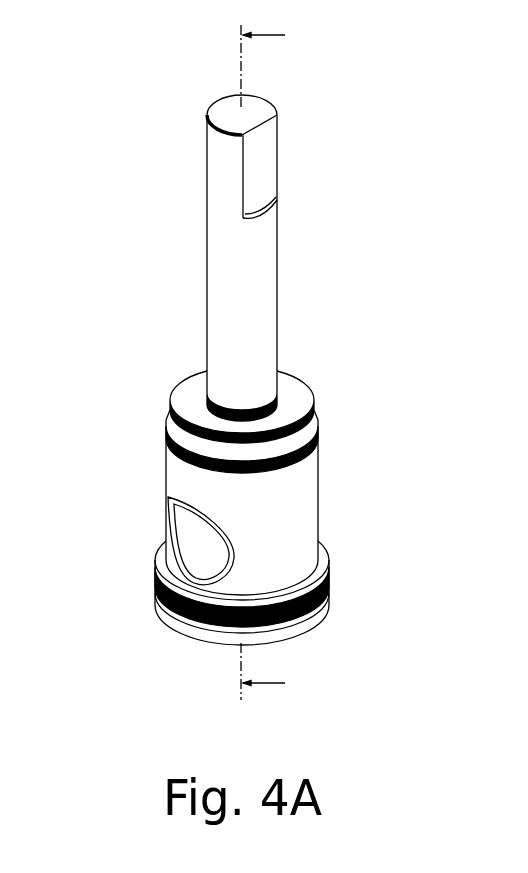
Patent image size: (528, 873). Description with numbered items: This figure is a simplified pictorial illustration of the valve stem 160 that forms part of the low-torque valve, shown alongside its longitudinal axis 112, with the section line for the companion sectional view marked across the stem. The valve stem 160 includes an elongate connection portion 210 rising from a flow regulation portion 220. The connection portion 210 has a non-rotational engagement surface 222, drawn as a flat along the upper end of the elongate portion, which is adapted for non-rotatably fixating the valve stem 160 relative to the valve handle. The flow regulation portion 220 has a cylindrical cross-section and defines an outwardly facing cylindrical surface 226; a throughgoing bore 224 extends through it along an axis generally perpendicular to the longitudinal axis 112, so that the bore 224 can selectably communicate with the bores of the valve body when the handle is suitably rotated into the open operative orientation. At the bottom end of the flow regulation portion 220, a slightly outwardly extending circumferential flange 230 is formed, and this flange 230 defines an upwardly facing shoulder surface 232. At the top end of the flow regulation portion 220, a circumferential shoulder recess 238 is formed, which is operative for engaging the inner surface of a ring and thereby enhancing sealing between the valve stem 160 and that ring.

The longitudinal axis 112 is at (243, 68).
The valve stem 160 is at (425, 355).
The elongate connection portion 210 is at (265, 276).
The flow regulation portion 220 is at (300, 503).
The non-rotational engagement surface 222 is at (271, 152).
The throughgoing bore 224 is at (170, 532).
The outwardly facing cylindrical surface 226 is at (318, 528).
The circumferential flange 230 is at (320, 606).
The upwardly facing shoulder surface 232 is at (328, 570).
The circumferential shoulder recess 238 is at (318, 425).